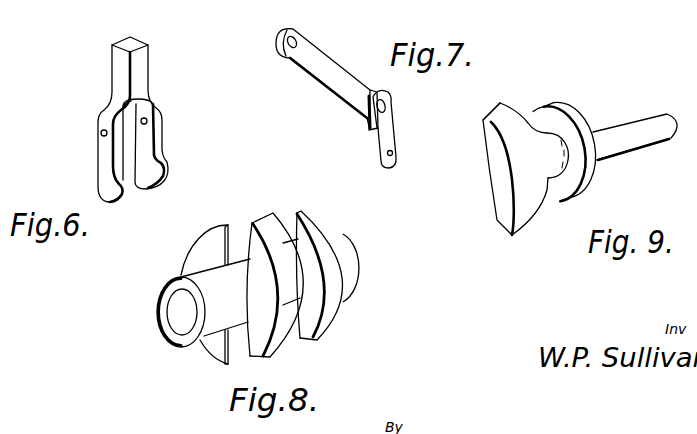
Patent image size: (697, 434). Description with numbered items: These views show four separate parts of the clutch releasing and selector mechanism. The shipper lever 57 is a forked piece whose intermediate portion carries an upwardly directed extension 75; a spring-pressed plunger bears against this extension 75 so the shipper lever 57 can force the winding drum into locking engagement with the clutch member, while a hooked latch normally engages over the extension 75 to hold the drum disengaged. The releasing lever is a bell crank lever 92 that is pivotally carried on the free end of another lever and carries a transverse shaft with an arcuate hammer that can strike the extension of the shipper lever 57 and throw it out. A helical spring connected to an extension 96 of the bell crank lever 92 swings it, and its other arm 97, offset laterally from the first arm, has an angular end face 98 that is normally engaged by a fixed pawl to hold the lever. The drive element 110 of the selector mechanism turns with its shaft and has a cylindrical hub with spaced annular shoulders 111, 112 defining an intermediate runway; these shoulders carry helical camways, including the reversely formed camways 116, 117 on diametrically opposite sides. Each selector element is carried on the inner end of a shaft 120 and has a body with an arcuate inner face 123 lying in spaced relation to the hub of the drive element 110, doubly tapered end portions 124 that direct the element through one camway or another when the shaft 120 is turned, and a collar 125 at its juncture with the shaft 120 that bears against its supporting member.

In FIG. 6, the upwardly directed extension 75 is at (143, 63).
In FIG. 6, the shipper lever 57 is at (157, 130).
In FIG. 7, the bell crank lever 92 is at (322, 69).
In FIG. 7, the angular end face 98 is at (370, 113).
In FIG. 7, the other arm of the bell crank lever 97 is at (388, 114).
In FIG. 7, the extension of the bell crank lever 96 is at (385, 135).
In FIG. 8, the annular shoulder 112 is at (285, 288).
In FIG. 8, the reversely formed camway 117 is at (229, 233).
In FIG. 8, the reversely formed camway 116 is at (279, 218).
In FIG. 8, the annular shoulder 111 is at (337, 309).
In FIG. 8, the drive element 110 is at (350, 265).
In FIG. 9, the shaft 120 is at (635, 142).
In FIG. 9, the collar 125 is at (571, 115).
In FIG. 9, the arcuate inner face 123 is at (503, 167).
In FIG. 9, the doubly tapered end portion 124 is at (490, 113).